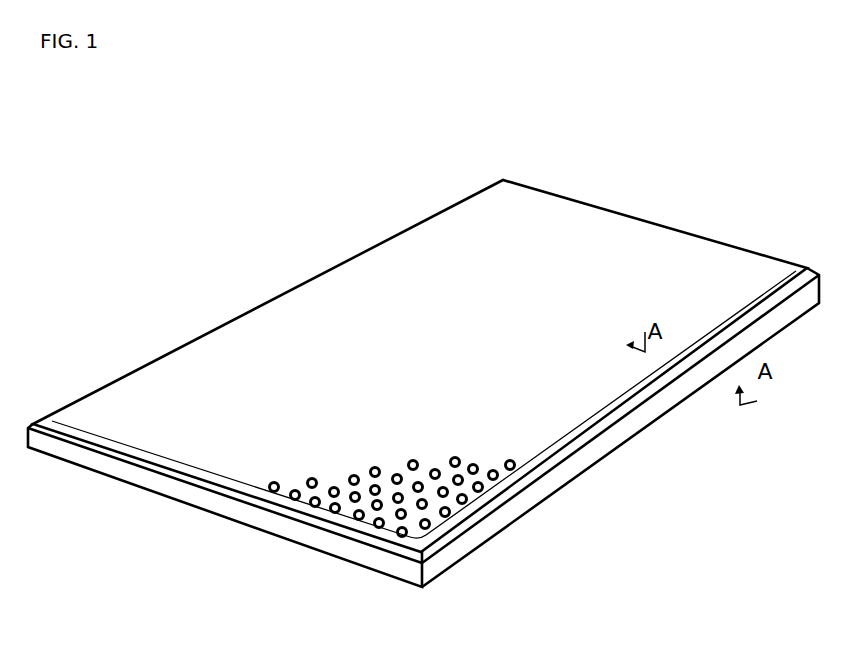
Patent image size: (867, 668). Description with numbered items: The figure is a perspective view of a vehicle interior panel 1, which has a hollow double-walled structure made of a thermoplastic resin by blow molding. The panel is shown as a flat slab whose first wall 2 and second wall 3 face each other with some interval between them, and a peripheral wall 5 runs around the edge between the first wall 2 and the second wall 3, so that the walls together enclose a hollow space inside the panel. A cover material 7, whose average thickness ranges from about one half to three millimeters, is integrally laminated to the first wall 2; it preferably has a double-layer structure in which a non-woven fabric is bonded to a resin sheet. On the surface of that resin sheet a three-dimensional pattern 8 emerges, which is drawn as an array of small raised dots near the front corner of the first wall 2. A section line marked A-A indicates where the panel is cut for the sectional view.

The vehicle interior panel 1 is at (274, 238).
The first wall 2 is at (455, 243).
The second wall 3 is at (201, 511).
The peripheral wall 5 is at (582, 464).
The cover material 7 is at (431, 512).
The three-dimensional pattern 8 is at (333, 530).